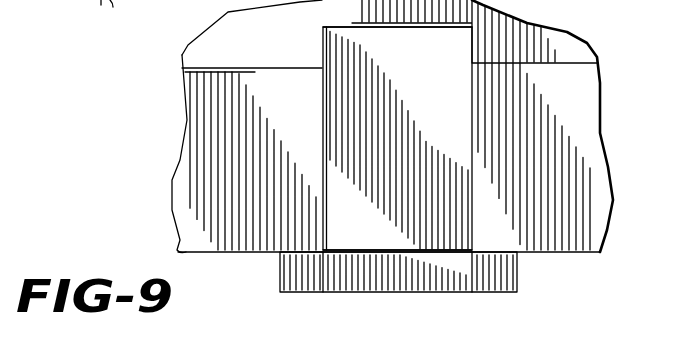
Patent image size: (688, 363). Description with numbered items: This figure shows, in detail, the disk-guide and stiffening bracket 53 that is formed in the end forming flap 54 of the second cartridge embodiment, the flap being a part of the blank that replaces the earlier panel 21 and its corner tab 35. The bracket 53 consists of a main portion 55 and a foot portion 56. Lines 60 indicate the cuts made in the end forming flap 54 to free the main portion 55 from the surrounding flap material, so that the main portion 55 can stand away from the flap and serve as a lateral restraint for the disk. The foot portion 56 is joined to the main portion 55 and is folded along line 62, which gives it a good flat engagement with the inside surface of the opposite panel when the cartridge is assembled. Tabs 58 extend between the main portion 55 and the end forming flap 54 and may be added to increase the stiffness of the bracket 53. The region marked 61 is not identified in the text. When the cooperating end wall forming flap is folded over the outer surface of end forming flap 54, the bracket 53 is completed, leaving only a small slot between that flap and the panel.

The panel 21 is at (213, 51).
The tab 35 is at (40, 0).
The disk-guide/stiffening bracket 53 is at (446, 296).
The end forming flap 54 is at (200, 160).
The main portion 55 is at (331, 53).
The foot portion 56 is at (377, 295).
The tabs 58 is at (538, 278).
The lines 60 is at (473, 110).
The top gap 61 is at (397, 29).
The line 62 is at (412, 222).